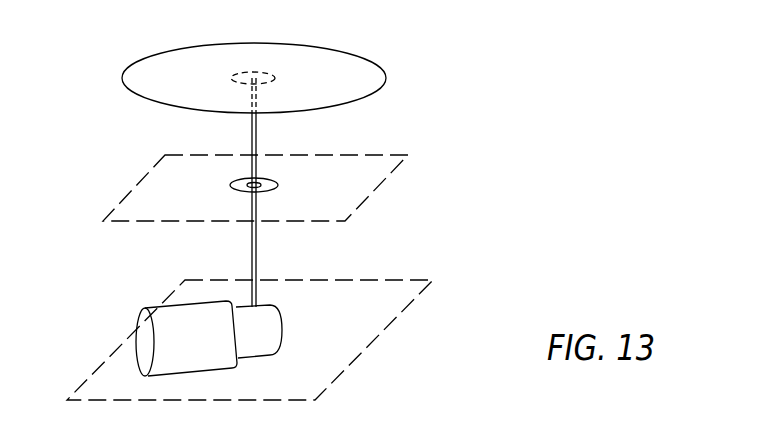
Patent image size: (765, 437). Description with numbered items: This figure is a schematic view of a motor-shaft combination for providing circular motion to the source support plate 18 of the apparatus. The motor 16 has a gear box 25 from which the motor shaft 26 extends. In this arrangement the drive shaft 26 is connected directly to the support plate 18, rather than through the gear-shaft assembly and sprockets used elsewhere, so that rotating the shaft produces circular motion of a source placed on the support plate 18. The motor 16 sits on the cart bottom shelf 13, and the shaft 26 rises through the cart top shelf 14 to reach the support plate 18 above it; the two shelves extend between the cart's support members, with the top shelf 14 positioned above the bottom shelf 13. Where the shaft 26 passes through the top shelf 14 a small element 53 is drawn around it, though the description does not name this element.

The cart bottom shelf 13 is at (365, 340).
The cart top shelf 14 is at (138, 205).
The motor 16 is at (148, 343).
The source support plate 18 is at (386, 77).
The gear box 25 is at (268, 337).
The motor shaft 26 is at (252, 290).
The bearing 53 is at (278, 186).